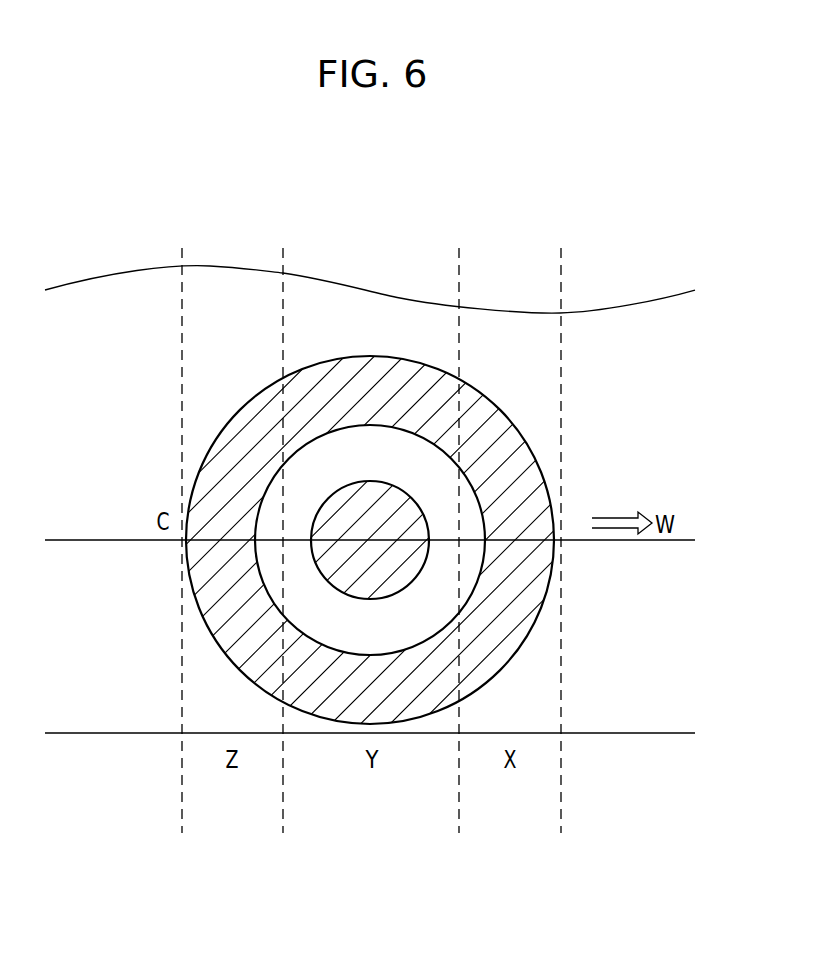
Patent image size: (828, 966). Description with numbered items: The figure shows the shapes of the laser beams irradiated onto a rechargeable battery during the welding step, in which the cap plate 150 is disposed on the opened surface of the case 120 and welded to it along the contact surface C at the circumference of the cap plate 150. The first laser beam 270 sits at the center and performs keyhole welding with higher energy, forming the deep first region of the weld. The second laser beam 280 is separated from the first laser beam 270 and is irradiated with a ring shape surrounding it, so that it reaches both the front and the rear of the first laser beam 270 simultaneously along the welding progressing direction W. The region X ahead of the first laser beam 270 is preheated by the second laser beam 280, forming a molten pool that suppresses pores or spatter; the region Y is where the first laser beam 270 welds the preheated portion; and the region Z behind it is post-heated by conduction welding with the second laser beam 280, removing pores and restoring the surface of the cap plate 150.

The cap plate 150 is at (612, 348).
The case 120 is at (603, 683).
The second laser beam 280 is at (382, 355).
The first laser beam 270 is at (363, 480).